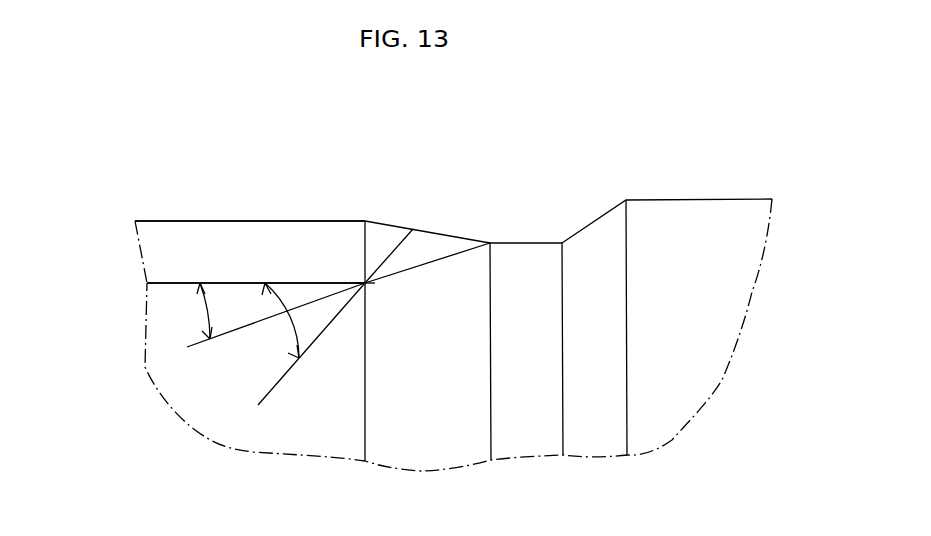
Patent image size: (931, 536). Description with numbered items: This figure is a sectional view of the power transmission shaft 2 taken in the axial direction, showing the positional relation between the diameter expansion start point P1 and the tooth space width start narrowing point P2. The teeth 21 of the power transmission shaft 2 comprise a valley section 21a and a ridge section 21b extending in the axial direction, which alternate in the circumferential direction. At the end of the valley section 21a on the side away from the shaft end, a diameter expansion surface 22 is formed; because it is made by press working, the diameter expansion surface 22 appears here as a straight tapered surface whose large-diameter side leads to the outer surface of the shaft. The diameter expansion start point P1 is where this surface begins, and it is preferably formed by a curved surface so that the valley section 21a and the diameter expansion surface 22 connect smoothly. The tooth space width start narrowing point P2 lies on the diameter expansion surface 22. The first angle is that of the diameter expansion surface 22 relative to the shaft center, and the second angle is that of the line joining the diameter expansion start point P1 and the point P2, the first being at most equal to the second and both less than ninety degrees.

The power transmission shaft 2 is at (718, 190).
The teeth 21 is at (130, 208).
The valley section 21a is at (167, 283).
The ridge section 21b is at (240, 221).
The diameter expansion surface 22 is at (452, 255).
The diameter expansion start point P1 is at (365, 283).
The tooth space width start narrowing point P2 is at (413, 229).